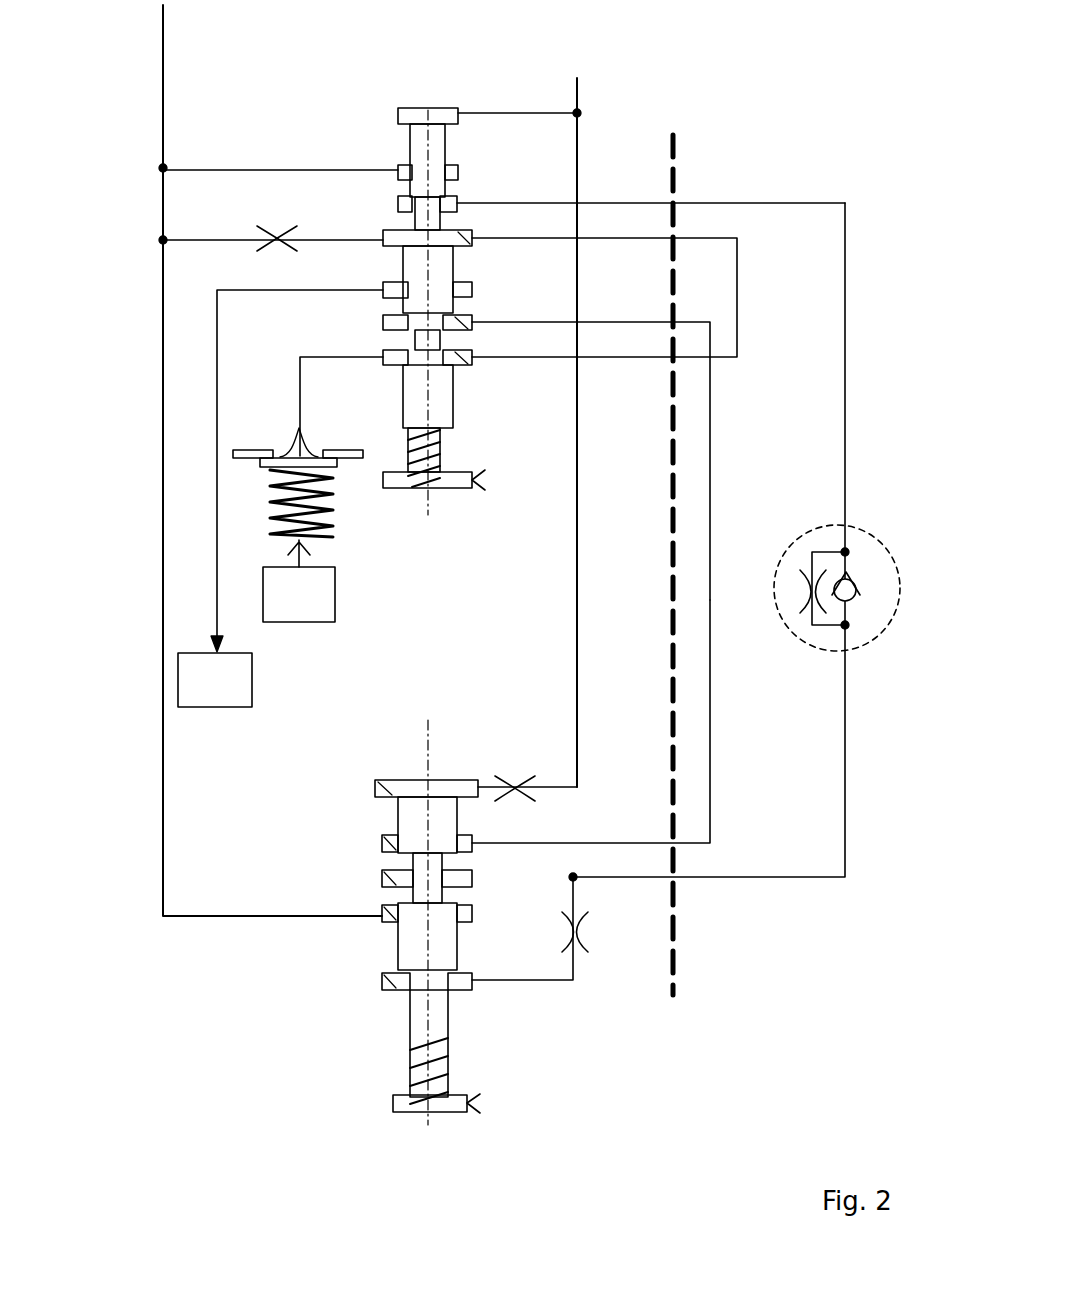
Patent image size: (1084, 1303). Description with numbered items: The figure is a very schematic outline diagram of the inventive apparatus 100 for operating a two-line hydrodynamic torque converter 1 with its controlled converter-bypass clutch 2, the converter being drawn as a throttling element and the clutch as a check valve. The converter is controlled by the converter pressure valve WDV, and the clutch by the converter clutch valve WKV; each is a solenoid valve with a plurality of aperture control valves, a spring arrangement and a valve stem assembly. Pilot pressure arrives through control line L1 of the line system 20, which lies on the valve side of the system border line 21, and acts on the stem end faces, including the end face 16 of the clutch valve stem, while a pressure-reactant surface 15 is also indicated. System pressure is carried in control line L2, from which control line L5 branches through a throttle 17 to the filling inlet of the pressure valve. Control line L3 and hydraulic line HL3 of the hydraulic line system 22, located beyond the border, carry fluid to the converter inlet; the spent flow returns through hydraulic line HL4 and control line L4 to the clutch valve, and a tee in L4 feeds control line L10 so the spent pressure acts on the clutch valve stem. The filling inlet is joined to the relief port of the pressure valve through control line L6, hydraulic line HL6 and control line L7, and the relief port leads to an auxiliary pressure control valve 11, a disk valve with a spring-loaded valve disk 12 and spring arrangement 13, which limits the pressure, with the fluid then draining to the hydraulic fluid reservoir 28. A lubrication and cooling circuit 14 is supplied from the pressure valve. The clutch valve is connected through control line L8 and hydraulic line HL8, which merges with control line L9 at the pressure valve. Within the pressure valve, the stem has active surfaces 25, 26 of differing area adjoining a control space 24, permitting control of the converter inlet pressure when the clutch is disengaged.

The hydrodynamic torque converter 1 is at (796, 592).
The controlled converter-bypass clutch 2 is at (866, 568).
The auxiliary pressure control valve 11 is at (275, 442).
The valve disk 12 is at (263, 465).
The spring arrangement of pressure control valve 13 is at (280, 540).
The lubrication and cooling circulation circuit 14 is at (190, 692).
The pressure-reactant surface 15 is at (457, 995).
The end face of valve stem assembly of the converter clutch valve 16 is at (413, 793).
The throttle valve 17 is at (240, 255).
The line system 20 is at (618, 972).
The system border line 21 is at (677, 923).
The hydraulic line system 22 is at (803, 900).
The control space 24 is at (400, 238).
The reactant surface of the valve stem assembly of the converter pressure valve 25 is at (400, 204).
The reactant surface of the valve stem assembly of the converter pressure valve 26 is at (405, 250).
The hydraulic fluid reservoir 28 is at (307, 600).
The inventive apparatus 100 is at (174, 935).
The converter pressure valve WDV is at (439, 324).
The converter clutch valve WKV is at (396, 919).
The control line L1 is at (577, 85).
The control line L2 is at (162, 432).
The control line L3 is at (618, 203).
The control line L4 is at (638, 877).
The control line L5 is at (223, 240).
The control line L6 is at (628, 240).
The control line L7 is at (660, 357).
The control line L8 is at (653, 841).
The control line L9 is at (623, 322).
The control line L10 is at (552, 980).
The hydraulic line HL3 is at (770, 203).
The hydraulic line HL4 is at (847, 810).
The hydraulic line HL6 is at (722, 330).
The hydraulic line HL8 is at (713, 813).